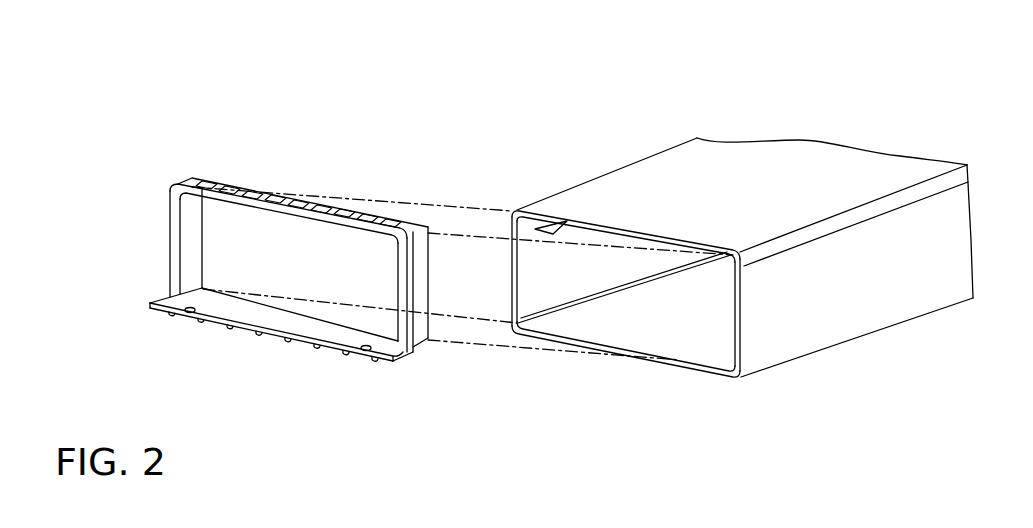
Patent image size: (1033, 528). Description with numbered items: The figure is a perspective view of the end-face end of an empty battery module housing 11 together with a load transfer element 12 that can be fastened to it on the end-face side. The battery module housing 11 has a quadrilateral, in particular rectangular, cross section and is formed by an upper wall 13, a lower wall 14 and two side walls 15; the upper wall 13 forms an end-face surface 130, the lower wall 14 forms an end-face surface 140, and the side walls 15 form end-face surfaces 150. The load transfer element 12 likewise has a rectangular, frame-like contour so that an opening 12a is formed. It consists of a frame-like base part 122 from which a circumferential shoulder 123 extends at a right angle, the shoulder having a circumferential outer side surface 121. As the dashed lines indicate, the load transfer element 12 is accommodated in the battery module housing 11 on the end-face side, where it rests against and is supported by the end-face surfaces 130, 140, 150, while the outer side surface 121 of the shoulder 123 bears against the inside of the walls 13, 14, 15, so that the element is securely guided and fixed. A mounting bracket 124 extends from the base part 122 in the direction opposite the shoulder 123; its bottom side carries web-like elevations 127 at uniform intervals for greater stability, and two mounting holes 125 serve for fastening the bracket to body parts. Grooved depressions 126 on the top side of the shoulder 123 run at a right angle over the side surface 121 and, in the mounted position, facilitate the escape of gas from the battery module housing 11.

The battery module housing 11 is at (862, 117).
The load transfer element 12 is at (192, 162).
The opening 12a is at (205, 243).
The outer side surface 121 is at (410, 223).
The frame-like base part 122 is at (175, 205).
The circumferential shoulder 123 is at (420, 248).
The mounting bracket 124 is at (255, 315).
The mounting holes 125 is at (190, 308).
The grooved depressions 126 is at (277, 195).
The web-like elevations 127 is at (283, 343).
The upper wall 13 is at (643, 190).
The end-face surface 130 is at (533, 228).
The lower wall 14 is at (662, 332).
The end-face surface 140 is at (621, 346).
The side walls 15 is at (535, 298).
The end-face surfaces 150 is at (514, 256).